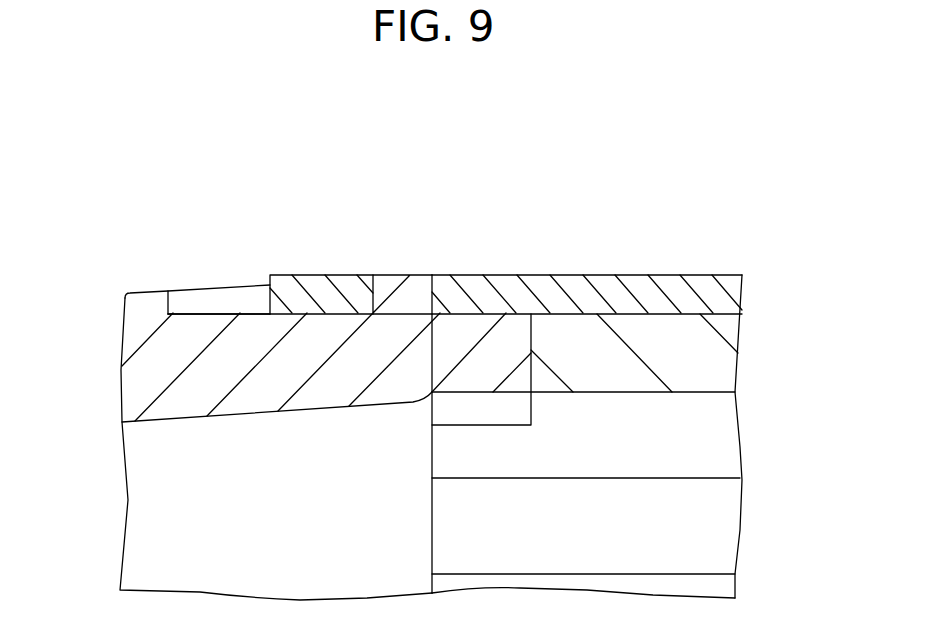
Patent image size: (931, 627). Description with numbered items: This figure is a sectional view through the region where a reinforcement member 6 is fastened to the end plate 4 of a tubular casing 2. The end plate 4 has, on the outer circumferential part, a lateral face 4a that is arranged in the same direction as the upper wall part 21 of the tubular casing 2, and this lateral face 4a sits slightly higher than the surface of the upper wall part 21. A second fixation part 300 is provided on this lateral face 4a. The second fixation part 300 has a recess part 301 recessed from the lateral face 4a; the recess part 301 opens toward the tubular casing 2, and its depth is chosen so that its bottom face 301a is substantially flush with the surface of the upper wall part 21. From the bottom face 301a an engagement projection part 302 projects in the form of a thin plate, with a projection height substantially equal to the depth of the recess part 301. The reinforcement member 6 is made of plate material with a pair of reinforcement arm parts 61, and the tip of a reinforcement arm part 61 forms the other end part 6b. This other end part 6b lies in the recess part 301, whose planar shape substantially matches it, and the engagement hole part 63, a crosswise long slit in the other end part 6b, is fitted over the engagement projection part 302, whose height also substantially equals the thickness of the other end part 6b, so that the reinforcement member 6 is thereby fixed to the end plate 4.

The tubular casing 2 is at (644, 408).
The end plate 4 is at (392, 398).
The lateral face 4a is at (140, 290).
The reinforcement member 6 is at (587, 230).
The other end part 6b is at (458, 275).
The upper wall part 21 is at (688, 328).
The reinforcement arm part 61 is at (567, 275).
The engagement hole part 63 is at (390, 275).
The second fixation part 300 is at (297, 200).
The recess part 301 is at (208, 256).
The bottom face 301a is at (223, 313).
The engagement projection part 302 is at (405, 275).